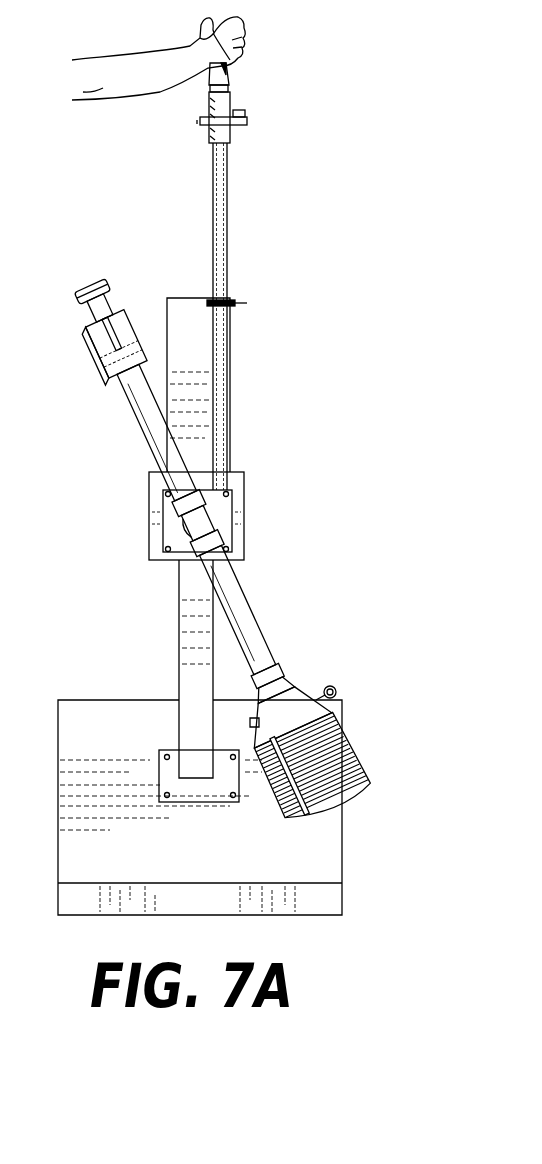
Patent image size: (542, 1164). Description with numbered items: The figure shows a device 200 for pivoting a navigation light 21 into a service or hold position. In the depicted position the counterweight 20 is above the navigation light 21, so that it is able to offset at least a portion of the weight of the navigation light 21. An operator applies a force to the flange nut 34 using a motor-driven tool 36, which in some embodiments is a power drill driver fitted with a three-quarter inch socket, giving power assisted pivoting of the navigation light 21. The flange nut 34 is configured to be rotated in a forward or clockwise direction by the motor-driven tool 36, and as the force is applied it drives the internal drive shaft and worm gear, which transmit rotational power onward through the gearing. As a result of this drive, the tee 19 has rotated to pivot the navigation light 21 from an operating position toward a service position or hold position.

The device 200 is at (238, 489).
The motor-driven tool 36 is at (246, 88).
The flange nut 34 is at (224, 113).
The counterweight 20 is at (212, 546).
The tee 19 is at (198, 523).
The navigation light 21 is at (300, 738).